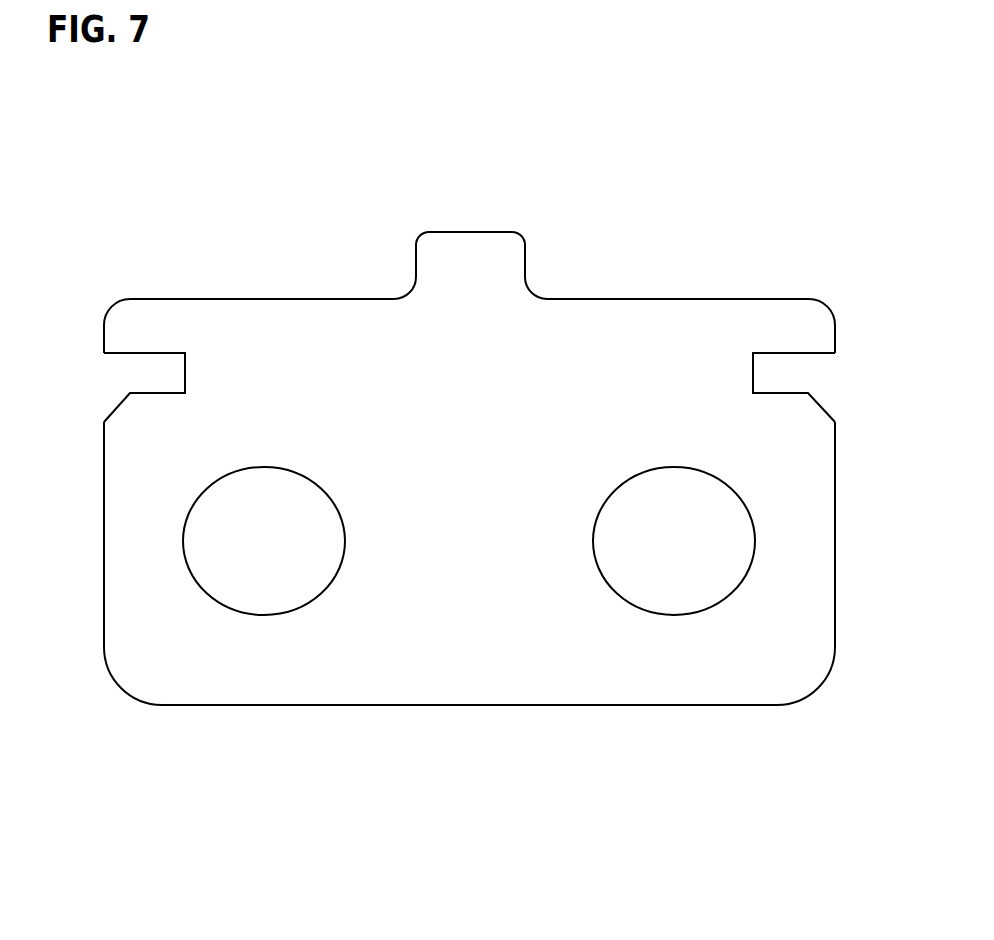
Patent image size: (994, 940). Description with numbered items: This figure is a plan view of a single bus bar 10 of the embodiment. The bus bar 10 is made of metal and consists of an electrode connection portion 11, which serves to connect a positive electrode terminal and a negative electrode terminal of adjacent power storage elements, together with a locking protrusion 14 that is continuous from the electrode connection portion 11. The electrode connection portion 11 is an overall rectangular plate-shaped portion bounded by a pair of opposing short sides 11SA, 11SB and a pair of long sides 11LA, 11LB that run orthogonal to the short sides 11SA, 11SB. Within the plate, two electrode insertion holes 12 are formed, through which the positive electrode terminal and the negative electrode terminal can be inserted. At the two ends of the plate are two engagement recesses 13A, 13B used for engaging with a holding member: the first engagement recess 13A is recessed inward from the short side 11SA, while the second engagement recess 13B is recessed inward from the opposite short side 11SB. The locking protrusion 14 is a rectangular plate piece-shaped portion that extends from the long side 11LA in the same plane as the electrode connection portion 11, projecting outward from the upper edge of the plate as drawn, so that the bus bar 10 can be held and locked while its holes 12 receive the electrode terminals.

The bus bar 10 is at (566, 139).
The electrode connection portion 11 is at (473, 462).
The long side 11LA is at (312, 298).
The long side 11LB is at (478, 705).
The short side 11SA is at (104, 542).
The short side 11SB is at (836, 518).
The electrode insertion hole 12 is at (217, 600).
The first engagement recess 13A is at (147, 354).
The second engagement recess 13B is at (779, 353).
The locking protrusion 14 is at (470, 252).